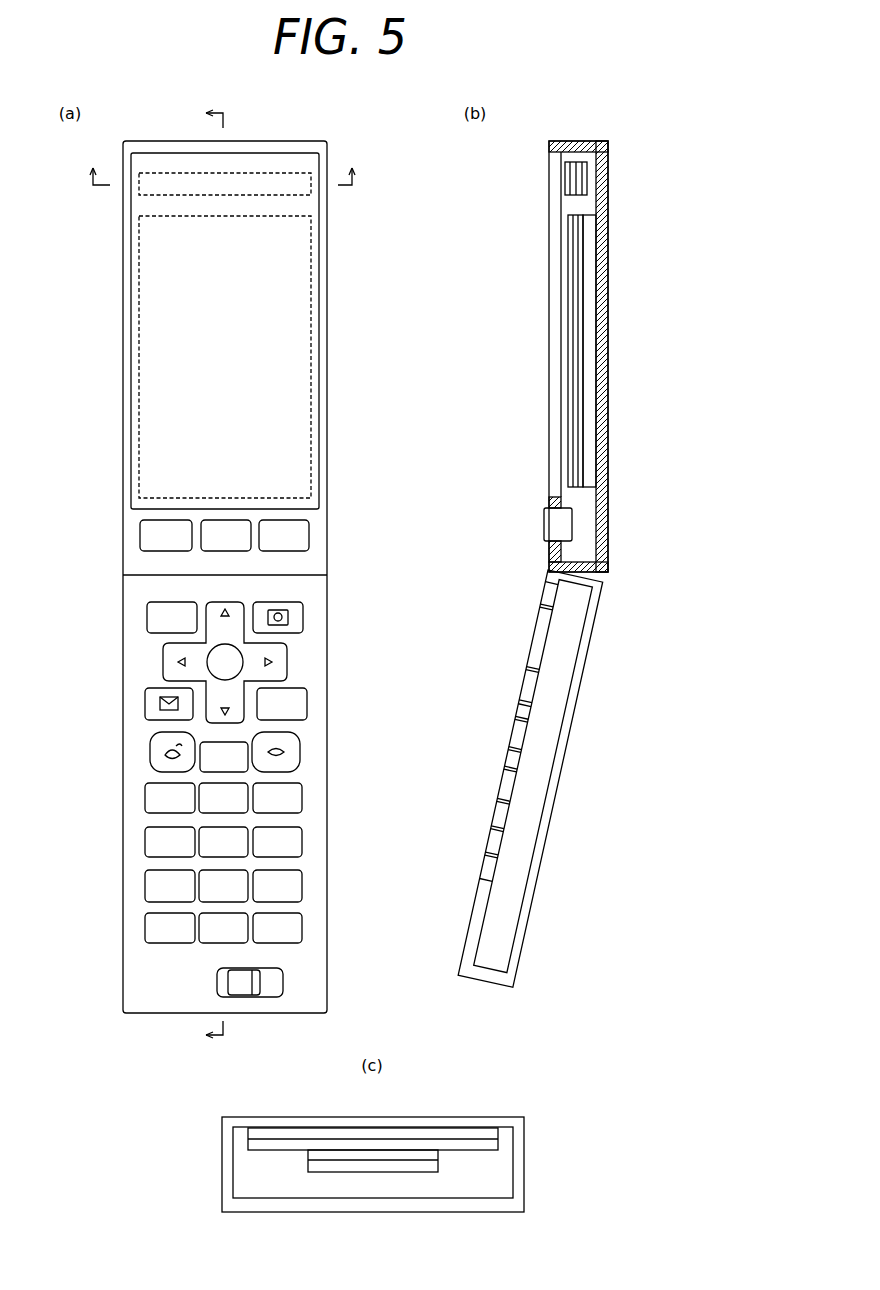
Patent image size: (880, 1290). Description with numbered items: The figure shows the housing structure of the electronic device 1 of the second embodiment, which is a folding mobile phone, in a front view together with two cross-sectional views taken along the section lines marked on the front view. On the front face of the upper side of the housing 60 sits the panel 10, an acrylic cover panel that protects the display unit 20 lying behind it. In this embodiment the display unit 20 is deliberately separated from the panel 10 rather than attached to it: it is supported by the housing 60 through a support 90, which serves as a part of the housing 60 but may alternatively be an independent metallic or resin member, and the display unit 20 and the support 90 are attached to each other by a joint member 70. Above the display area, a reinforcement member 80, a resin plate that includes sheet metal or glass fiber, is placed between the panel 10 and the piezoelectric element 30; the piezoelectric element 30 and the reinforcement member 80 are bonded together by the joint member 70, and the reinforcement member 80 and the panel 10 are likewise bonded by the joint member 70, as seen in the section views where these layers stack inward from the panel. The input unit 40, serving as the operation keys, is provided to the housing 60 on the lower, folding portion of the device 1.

The electronic device 1 is at (184, 134).
The panel 10 is at (245, 153).
The display unit 20 is at (313, 302).
The piezoelectric element 30 is at (305, 192).
The input unit 40 is at (290, 535).
The housing 60 is at (123, 273).
The joint member 70 is at (568, 160).
The reinforcement member 80 is at (565, 183).
The support 90 is at (590, 264).